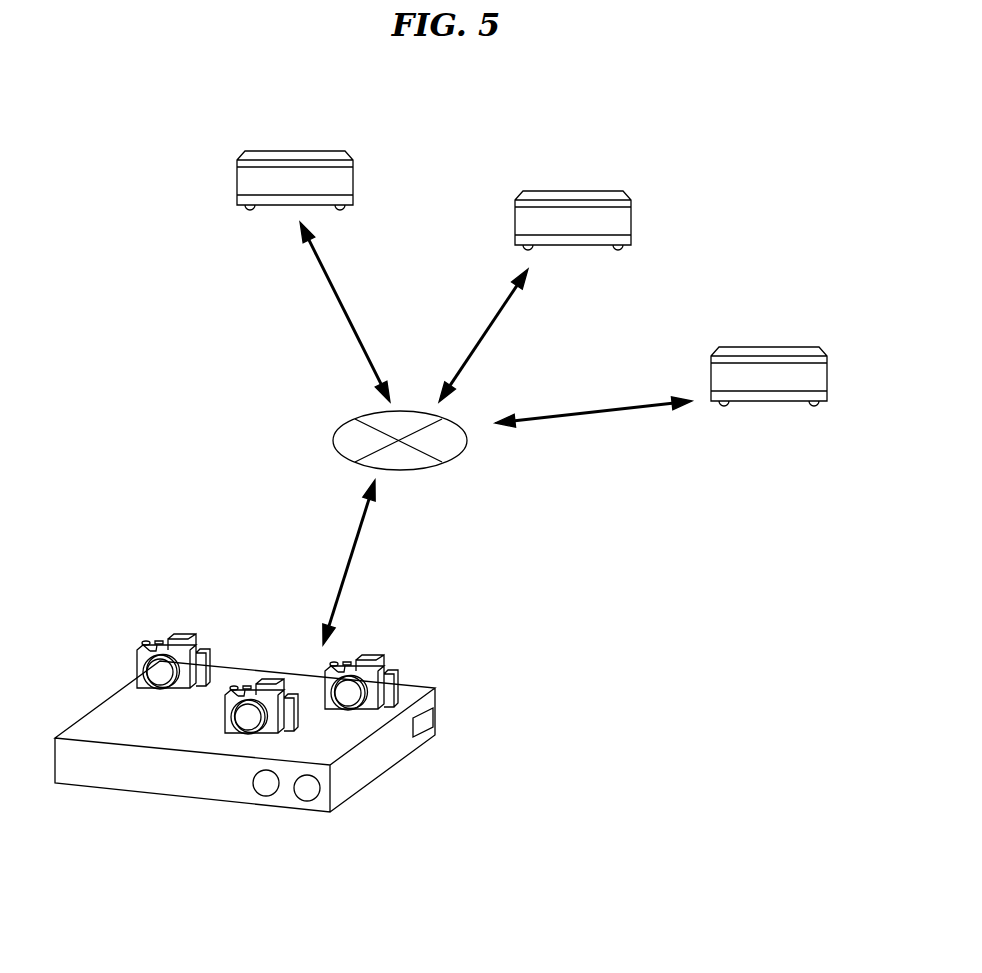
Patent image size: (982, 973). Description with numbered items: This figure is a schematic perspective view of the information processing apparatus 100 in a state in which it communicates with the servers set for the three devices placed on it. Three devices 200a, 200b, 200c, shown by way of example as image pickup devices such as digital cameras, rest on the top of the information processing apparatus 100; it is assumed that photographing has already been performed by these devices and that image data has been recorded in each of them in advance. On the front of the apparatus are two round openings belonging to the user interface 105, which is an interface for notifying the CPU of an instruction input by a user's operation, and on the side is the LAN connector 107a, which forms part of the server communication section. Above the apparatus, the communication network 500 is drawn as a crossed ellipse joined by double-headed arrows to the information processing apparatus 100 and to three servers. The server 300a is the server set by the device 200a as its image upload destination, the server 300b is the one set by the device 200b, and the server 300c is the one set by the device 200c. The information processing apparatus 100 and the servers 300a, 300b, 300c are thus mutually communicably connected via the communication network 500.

The information processing apparatus 100 is at (417, 685).
The user interface 105 is at (263, 790).
The LAN connector 107a is at (433, 717).
The device 200a is at (176, 640).
The device 200b is at (263, 684).
The device 200c is at (365, 662).
The server 300a is at (293, 150).
The server 300b is at (572, 190).
The server 300c is at (767, 346).
The communication network 500 is at (333, 440).